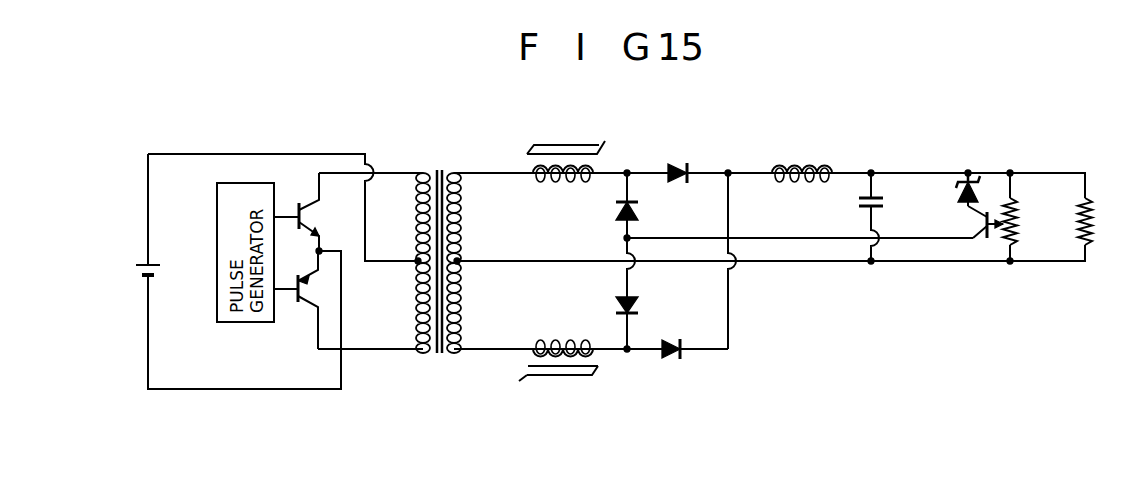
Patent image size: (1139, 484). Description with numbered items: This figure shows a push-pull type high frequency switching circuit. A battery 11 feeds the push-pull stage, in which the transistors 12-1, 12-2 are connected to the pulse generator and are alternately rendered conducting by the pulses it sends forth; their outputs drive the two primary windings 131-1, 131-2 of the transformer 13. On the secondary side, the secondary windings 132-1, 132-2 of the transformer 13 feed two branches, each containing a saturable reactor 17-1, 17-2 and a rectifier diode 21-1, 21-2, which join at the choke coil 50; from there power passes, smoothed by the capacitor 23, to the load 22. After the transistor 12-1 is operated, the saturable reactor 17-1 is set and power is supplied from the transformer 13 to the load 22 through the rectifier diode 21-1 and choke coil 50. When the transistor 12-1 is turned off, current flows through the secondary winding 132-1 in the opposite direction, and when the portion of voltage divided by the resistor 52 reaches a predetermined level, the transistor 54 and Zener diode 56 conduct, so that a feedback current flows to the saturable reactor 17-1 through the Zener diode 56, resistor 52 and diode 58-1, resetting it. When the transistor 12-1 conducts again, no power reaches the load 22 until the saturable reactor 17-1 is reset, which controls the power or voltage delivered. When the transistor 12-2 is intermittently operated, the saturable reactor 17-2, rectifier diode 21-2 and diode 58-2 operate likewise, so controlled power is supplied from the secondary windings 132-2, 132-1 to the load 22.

The battery 11 is at (155, 265).
The transistor 12-1 is at (311, 203).
The transistor 12-2 is at (290, 300).
The transformer 13 is at (442, 235).
The primary winding 131-1 is at (412, 222).
The primary winding 131-2 is at (408, 302).
The secondary winding 132-1 is at (465, 205).
The secondary winding 132-2 is at (468, 313).
The saturable reactor 17-1 is at (568, 142).
The saturable reactor 17-2 is at (555, 381).
The rectifier diode 21-1 is at (684, 160).
The rectifier diode 21-2 is at (694, 356).
The diode 58-1 is at (641, 208).
The diode 58-2 is at (641, 305).
The choke coil 50 is at (808, 160).
The capacitor 23 is at (856, 204).
The Zener diode 56 is at (956, 196).
The transistor 54 is at (982, 250).
The resistor 52 is at (1022, 212).
The load 22 is at (1098, 212).